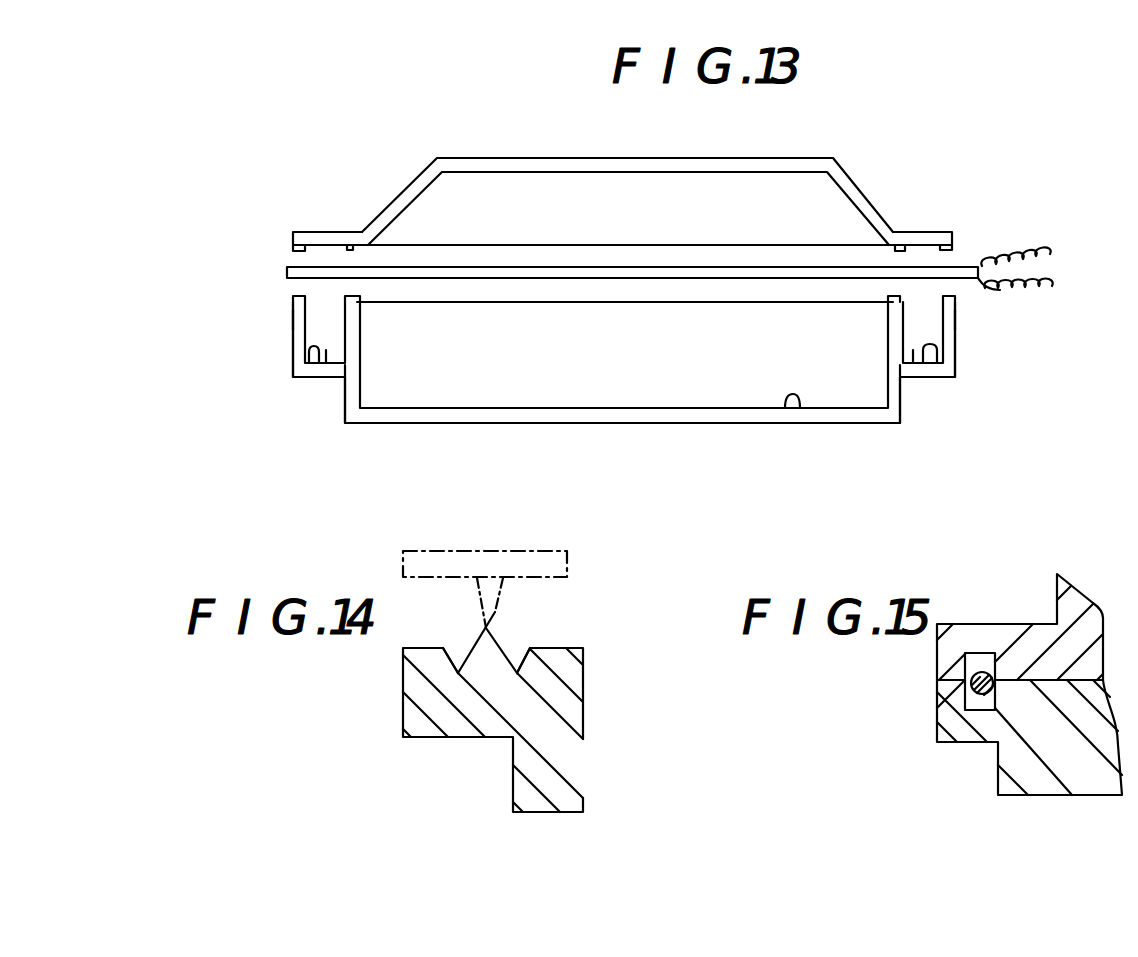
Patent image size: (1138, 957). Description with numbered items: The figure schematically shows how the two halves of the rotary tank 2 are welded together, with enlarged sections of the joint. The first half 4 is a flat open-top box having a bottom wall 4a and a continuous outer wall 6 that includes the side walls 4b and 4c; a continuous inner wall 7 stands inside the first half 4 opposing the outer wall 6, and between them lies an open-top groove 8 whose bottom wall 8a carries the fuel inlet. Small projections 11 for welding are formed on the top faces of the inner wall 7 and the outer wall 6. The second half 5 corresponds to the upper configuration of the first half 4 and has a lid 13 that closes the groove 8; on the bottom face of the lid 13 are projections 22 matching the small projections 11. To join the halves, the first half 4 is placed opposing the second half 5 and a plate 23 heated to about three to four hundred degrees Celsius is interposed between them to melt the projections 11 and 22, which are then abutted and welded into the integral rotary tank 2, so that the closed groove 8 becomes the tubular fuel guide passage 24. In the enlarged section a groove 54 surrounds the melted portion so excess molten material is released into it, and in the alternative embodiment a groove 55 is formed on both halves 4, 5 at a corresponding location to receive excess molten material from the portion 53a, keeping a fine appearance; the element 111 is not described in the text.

In FIG. 13, the rotary tank 2 is at (853, 133).
In FIG. 13, the first half 4 is at (650, 422).
In FIG. 15, the first half 4 is at (998, 623).
In FIG. 13, the bottom wall 4a is at (798, 410).
In FIG. 13, the side wall 4b is at (955, 336).
In FIG. 13, the side wall 4c is at (293, 345).
In FIG. 13, the second half 5 is at (484, 158).
In FIG. 14, the second half 5 is at (550, 813).
In FIG. 15, the second half 5 is at (1083, 796).
In FIG. 13, the outer wall 6 is at (293, 318).
In FIG. 13, the inner wall 7 is at (338, 370).
In FIG. 14, the inner wall 7 is at (468, 725).
In FIG. 15, the inner wall 7 is at (1020, 796).
In FIG. 13, the groove 8 is at (325, 353).
In FIG. 13, the bottom wall of groove 8a is at (310, 354).
In FIG. 13, the small projections 11 is at (300, 298).
In FIG. 13, the lid 13 is at (326, 232).
In FIG. 13, the projections 22 is at (298, 251).
In FIG. 13, the plate 23 is at (625, 268).
In FIG. 13, the fuel guide passage 24 is at (330, 303).
In FIG. 14, the groove 54 is at (458, 655).
In FIG. 15, the groove 55 is at (975, 708).
In FIG. 15, the portion to be melted 53a is at (965, 700).
In FIG. 14, the tape 111 is at (492, 635).